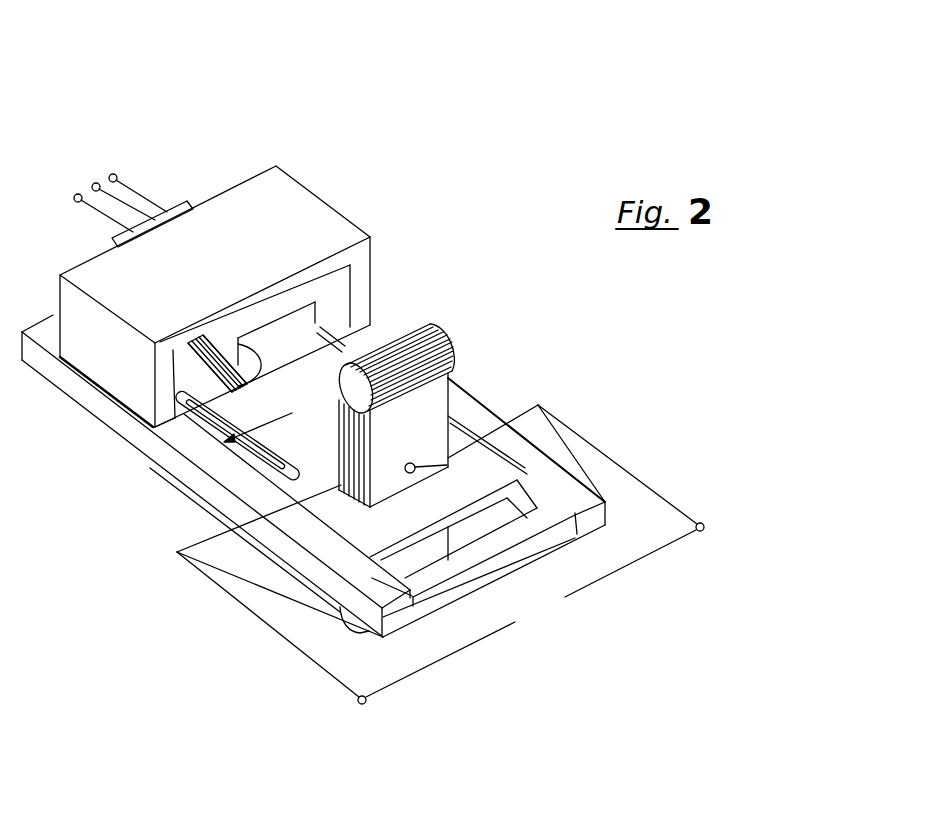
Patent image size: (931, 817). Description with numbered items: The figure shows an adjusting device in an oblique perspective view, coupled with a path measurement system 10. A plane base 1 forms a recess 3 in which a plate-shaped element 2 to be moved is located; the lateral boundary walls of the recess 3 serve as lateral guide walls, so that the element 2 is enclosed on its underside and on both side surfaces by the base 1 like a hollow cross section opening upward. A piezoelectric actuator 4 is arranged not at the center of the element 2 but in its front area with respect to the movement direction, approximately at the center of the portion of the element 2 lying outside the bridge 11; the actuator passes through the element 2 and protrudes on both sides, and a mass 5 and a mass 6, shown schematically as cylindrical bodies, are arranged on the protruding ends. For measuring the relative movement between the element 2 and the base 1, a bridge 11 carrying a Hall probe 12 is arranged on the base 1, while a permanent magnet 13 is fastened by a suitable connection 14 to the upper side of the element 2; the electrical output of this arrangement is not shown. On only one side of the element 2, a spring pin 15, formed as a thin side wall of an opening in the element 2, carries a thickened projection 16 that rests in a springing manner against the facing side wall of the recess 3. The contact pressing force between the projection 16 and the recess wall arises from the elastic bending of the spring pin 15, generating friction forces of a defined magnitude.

The base 1 is at (367, 578).
The plate-shaped element 2 is at (473, 488).
The recess 3 is at (553, 527).
The piezoelectric actuator 4 is at (427, 410).
The mass 5 is at (427, 325).
The mass 6 is at (366, 634).
The path measurement system 10 is at (242, 138).
The bridge 11 is at (250, 237).
The Hall probe 12 is at (276, 317).
The permanent magnet 13 is at (288, 304).
The connection 14 is at (176, 352).
The spring pin 15 is at (267, 470).
The thickened projection 16 is at (220, 438).